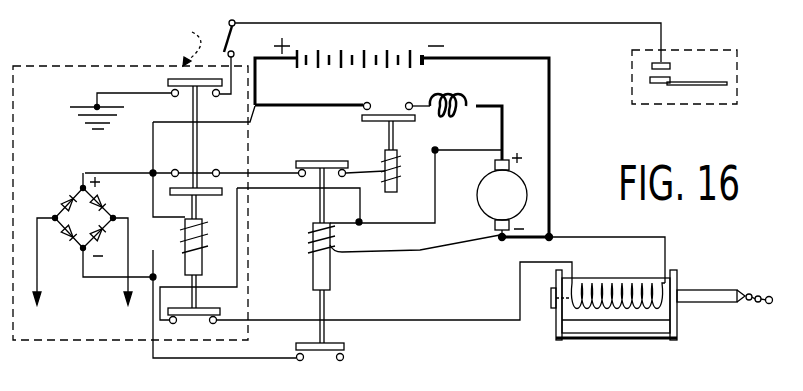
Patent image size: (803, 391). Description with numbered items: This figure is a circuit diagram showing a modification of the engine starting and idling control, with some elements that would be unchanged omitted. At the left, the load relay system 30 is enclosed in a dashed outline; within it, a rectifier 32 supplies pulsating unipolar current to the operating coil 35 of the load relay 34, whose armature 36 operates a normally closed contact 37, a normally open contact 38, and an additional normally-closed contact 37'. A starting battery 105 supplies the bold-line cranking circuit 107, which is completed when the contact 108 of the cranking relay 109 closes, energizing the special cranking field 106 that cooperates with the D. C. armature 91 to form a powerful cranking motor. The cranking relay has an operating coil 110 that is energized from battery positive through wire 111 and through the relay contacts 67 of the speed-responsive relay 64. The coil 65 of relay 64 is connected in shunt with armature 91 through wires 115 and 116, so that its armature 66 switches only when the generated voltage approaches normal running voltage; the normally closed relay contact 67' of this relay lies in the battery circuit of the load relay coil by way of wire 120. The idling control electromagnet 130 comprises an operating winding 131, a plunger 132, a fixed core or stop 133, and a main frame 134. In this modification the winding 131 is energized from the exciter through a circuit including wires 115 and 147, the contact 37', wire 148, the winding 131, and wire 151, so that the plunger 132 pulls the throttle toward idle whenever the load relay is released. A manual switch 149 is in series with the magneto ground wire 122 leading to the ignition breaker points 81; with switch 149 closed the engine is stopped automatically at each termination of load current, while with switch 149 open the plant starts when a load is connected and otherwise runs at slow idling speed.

The load relay system 30 is at (184, 62).
The manual switch 149 is at (226, 38).
The wire 122 is at (580, 25).
The magneto breaker points 81 is at (667, 80).
The starting battery 105 is at (390, 56).
The cranking circuit 107 is at (314, 105).
The contact 108 is at (386, 114).
The cranking field 106 is at (452, 101).
The D. C. armature 91 is at (510, 181).
The wire 151 is at (668, 240).
The wire 111 is at (252, 124).
The normally closed contact 37 is at (146, 130).
The normally open contact 38 is at (207, 195).
The load relay 34 is at (185, 229).
The operating coil 35 is at (208, 235).
The armature 36 is at (203, 266).
The additional contact 37' is at (198, 256).
The wire 120 is at (187, 359).
The wire 148 is at (406, 321).
The relay contacts 67 is at (340, 180).
The relay 64 is at (307, 265).
The coil 65 is at (330, 233).
The armature 66 is at (330, 278).
The normally closed relay contact 67' is at (320, 366).
The wire 147 is at (295, 188).
The wire 115 is at (435, 212).
The cranking relay 109 is at (385, 155).
The operating coil 110 is at (397, 160).
The wire 116 is at (440, 249).
The rectifier 32 is at (60, 193).
The electromagnet 130 is at (551, 336).
The main frame 134 is at (600, 337).
The operating winding 131 is at (630, 263).
The fixed core 133 is at (549, 300).
The plunger 132 is at (713, 305).